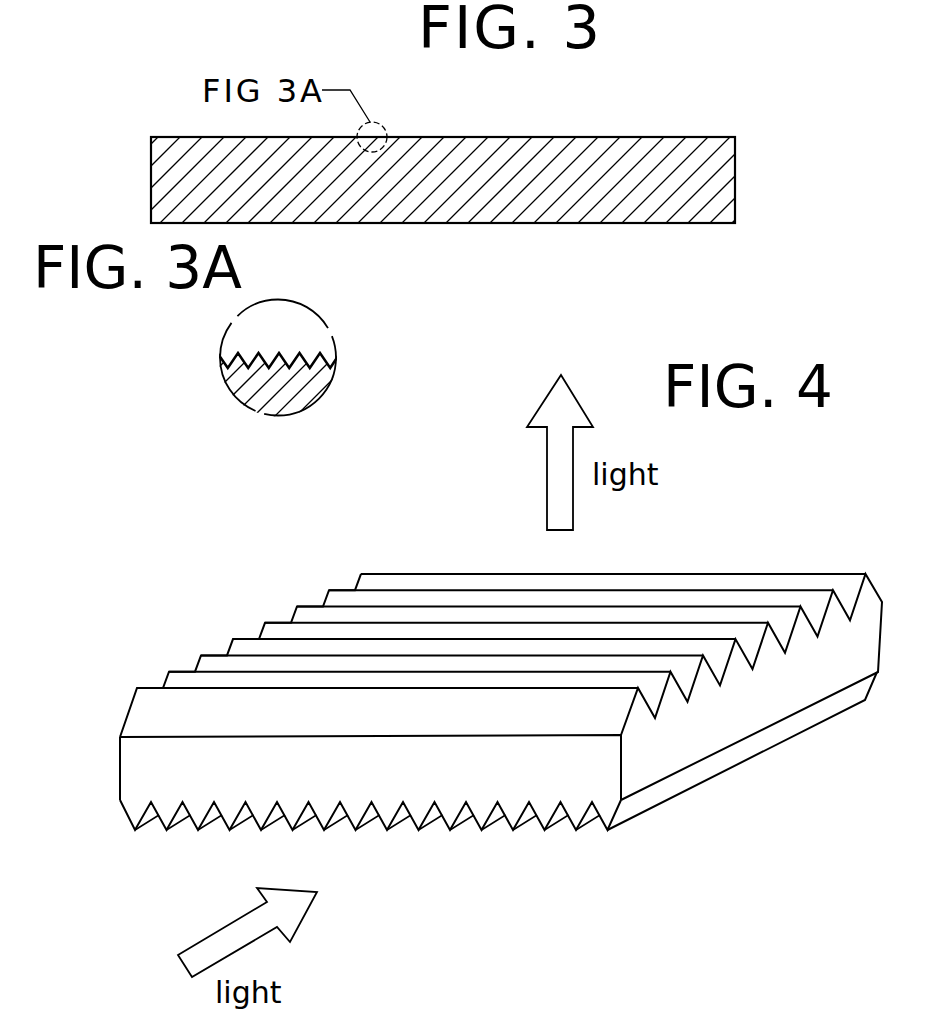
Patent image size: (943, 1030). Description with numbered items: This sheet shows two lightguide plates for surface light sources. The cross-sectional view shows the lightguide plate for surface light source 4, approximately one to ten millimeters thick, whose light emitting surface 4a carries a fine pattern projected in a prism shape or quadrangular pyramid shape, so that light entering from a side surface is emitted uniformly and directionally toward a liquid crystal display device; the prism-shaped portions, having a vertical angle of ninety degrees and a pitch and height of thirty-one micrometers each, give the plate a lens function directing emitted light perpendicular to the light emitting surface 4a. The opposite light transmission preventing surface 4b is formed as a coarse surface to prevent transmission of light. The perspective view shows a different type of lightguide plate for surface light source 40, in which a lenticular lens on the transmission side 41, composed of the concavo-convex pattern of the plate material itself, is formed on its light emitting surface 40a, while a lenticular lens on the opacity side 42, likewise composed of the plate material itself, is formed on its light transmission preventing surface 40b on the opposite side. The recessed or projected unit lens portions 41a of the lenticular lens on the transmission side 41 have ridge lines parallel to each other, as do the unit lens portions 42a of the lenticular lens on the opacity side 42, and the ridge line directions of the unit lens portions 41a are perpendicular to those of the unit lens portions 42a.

In FIG. 3, the lightguide plate for surface light source 4 is at (735, 182).
In FIG. 3, the light emitting surface 4a is at (690, 137).
In FIG. 3A, the light emitting surface 4a is at (300, 353).
In FIG. 3, the light transmission preventing surface 4b is at (680, 224).
In FIG. 4, the lightguide plate for surface light source 40 is at (292, 583).
In FIG. 4, the light emitting surface 40a is at (197, 663).
In FIG. 4, the light transmission preventing surface 40b is at (376, 885).
In FIG. 4, the lenticular lens on the transmission side 41 is at (485, 573).
In FIG. 4, the unit lens portions 41a is at (480, 510).
In FIG. 4, the lenticular lens on the opacity side 42 is at (376, 885).
In FIG. 4, the unit lens portions 42a is at (633, 917).